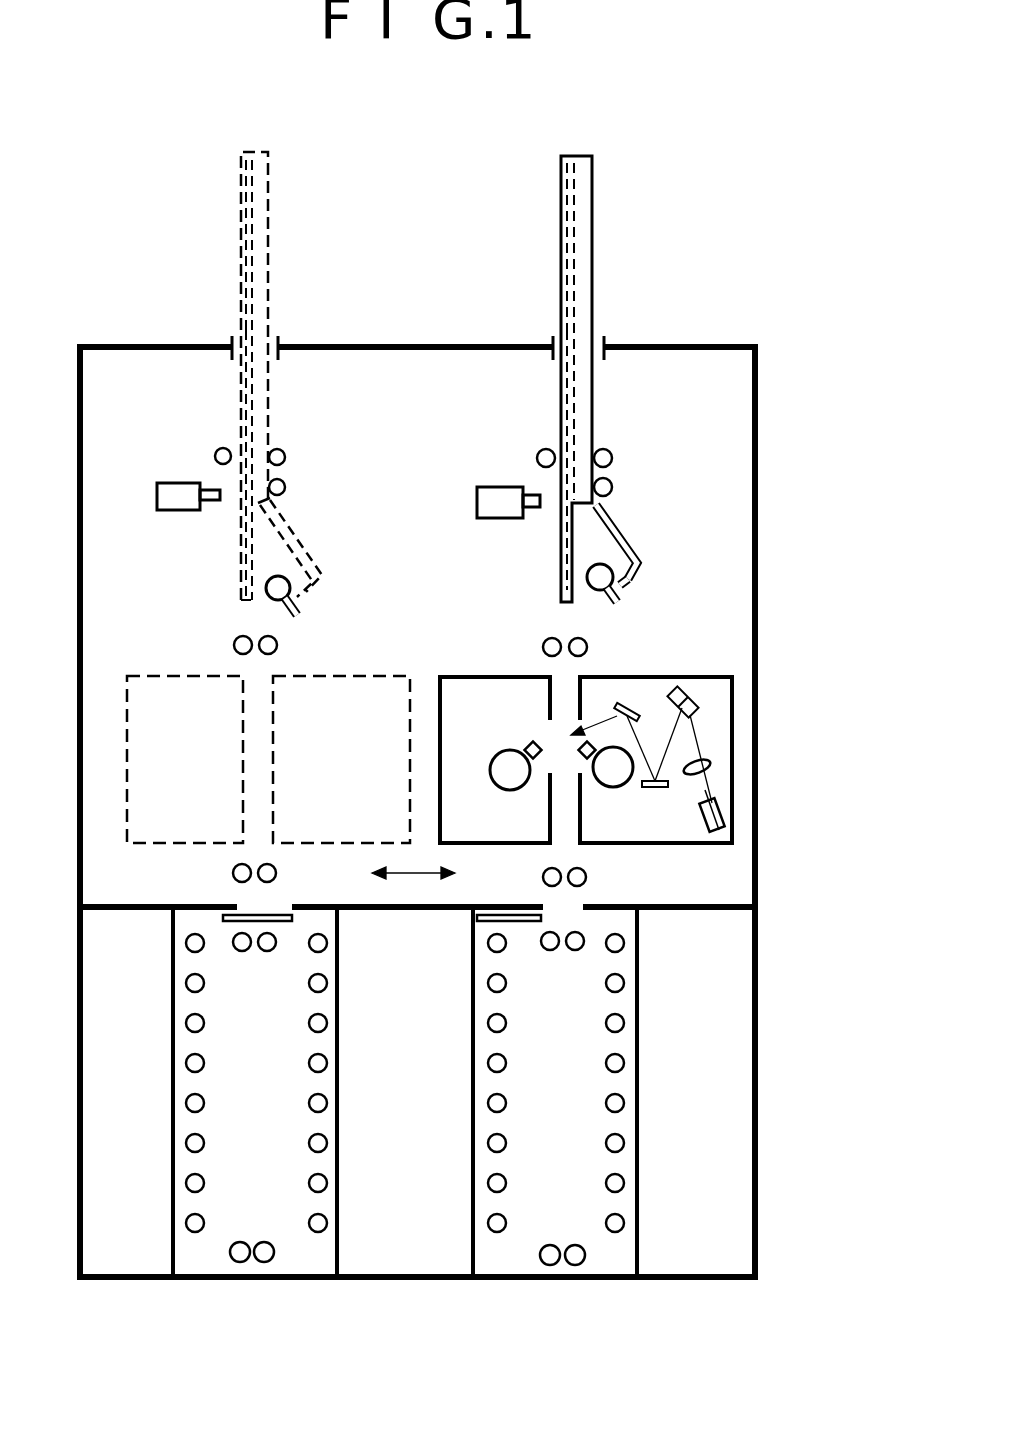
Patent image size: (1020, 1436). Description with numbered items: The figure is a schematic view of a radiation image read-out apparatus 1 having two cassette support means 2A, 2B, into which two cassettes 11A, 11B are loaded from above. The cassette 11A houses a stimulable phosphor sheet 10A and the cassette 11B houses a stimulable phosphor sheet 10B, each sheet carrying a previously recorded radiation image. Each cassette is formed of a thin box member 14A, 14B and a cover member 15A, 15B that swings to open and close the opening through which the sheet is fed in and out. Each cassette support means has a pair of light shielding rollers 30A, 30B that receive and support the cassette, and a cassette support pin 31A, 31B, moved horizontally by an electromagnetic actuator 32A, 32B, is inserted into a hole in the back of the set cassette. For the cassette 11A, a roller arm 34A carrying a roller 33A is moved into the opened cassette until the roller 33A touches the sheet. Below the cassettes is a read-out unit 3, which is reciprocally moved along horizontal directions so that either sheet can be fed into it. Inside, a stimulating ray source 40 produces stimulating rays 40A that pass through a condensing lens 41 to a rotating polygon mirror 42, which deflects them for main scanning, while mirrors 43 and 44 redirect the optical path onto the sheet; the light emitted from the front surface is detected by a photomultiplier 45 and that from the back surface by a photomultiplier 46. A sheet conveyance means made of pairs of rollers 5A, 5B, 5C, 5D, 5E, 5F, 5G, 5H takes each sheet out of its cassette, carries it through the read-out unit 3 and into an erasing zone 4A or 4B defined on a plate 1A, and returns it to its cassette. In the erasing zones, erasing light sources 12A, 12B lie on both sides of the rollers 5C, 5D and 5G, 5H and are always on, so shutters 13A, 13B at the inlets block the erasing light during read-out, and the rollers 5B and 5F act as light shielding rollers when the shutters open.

The radiation image read-out apparatus 1 is at (420, 277).
The plate 1A is at (738, 905).
The cassette support means 2A is at (645, 365).
The cassette support means 2B is at (314, 357).
The read-out unit 3 is at (733, 708).
The erasing zone 4A is at (593, 1129).
The erasing zone 4B is at (262, 1127).
The pair of rollers 5A is at (543, 647).
The pair of light shielding rollers 5B is at (587, 877).
The pair of rollers 5C is at (575, 950).
The pair of rollers 5D is at (551, 1245).
The pair of rollers 5E is at (278, 645).
The pair of light shielding rollers 5F is at (233, 875).
The pair of rollers 5G is at (235, 945).
The pair of rollers 5H is at (262, 1242).
The stimulable phosphor sheet 10A is at (593, 395).
The stimulable phosphor sheet 10B is at (253, 382).
The cassette 11A is at (599, 230).
The cassette 11B is at (273, 217).
The erasing light sources 12A is at (623, 1105).
The erasing light sources 12B is at (327, 1103).
The shutter 13A is at (510, 908).
The shutter 13B is at (300, 918).
The box member 14A is at (583, 153).
The box member 14B is at (253, 138).
The cover member 15A is at (632, 548).
The cover member 15B is at (313, 560).
The pair of light shielding rollers 30A is at (612, 458).
The pair of light shielding rollers 30B is at (285, 455).
The cassette support pin 31A is at (540, 452).
The cassette support pin 31B is at (218, 449).
The electromagnetic actuator 32A is at (480, 487).
The electromagnetic actuator 32B is at (160, 483).
The roller 33A is at (632, 567).
The roller arm 34A is at (620, 600).
The stimulating ray source 40 is at (728, 820).
The stimulating rays 40A is at (722, 802).
The condensing lens 41 is at (712, 762).
The rotating polygon mirror 42 is at (692, 693).
The mirror 43 is at (657, 790).
The mirror 44 is at (632, 705).
The photomultiplier 45 is at (592, 765).
The photomultiplier 46 is at (490, 773).